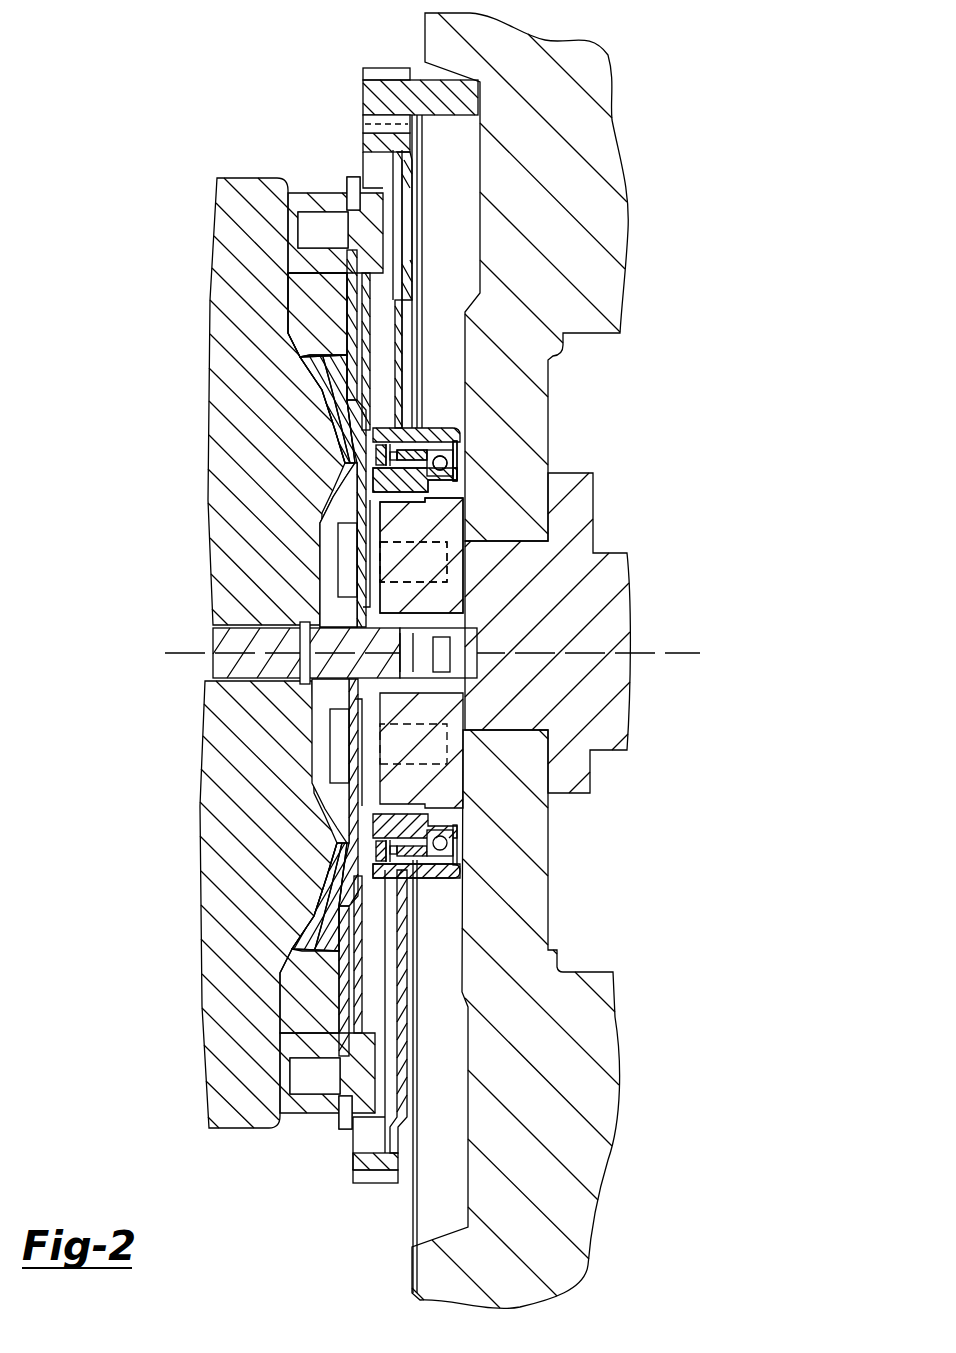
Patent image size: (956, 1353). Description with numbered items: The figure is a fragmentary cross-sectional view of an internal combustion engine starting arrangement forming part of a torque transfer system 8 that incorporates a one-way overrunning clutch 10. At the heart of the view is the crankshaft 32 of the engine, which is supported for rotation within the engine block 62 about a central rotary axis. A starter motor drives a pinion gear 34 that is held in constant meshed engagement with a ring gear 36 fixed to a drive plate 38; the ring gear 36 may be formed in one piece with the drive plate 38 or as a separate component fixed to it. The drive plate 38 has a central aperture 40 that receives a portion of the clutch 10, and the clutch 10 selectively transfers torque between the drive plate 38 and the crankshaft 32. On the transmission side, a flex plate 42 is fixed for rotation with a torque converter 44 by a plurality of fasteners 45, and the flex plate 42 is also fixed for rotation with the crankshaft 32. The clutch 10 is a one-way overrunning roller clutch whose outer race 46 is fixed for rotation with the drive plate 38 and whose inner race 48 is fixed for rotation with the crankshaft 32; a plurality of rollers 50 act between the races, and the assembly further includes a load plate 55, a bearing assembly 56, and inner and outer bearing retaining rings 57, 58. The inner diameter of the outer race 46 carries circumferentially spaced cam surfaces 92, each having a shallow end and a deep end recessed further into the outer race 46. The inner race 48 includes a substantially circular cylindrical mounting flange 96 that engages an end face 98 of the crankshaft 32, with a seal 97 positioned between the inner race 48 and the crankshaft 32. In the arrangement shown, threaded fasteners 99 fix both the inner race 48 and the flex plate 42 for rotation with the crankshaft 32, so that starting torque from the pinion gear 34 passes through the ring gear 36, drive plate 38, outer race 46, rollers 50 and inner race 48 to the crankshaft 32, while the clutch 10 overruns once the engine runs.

The torque transfer system 8 is at (646, 132).
The one-way overrunning clutch 10 is at (440, 420).
The crankshaft 32 is at (617, 617).
The pinion gear 34 is at (382, 68).
The ring gear 36 is at (375, 128).
The drive plate 38 is at (400, 173).
The central aperture 40 is at (353, 455).
The flex plate 42 is at (352, 404).
The torque converter 44 is at (222, 185).
The fasteners 45 is at (318, 215).
The outer race 46 is at (438, 876).
The inner race 48 is at (387, 825).
The rollers 50 is at (393, 853).
The load plate 55 is at (417, 880).
The bearing assembly 56 is at (443, 478).
The inner bearing retaining ring 57 is at (457, 475).
The outer bearing retaining ring 58 is at (457, 453).
The engine block 62 is at (588, 1160).
The cam surfaces 92 is at (410, 847).
The mounting flange 96 is at (373, 607).
The seal 97 is at (400, 495).
The end face 98 is at (390, 577).
The threaded fasteners 99 is at (350, 542).